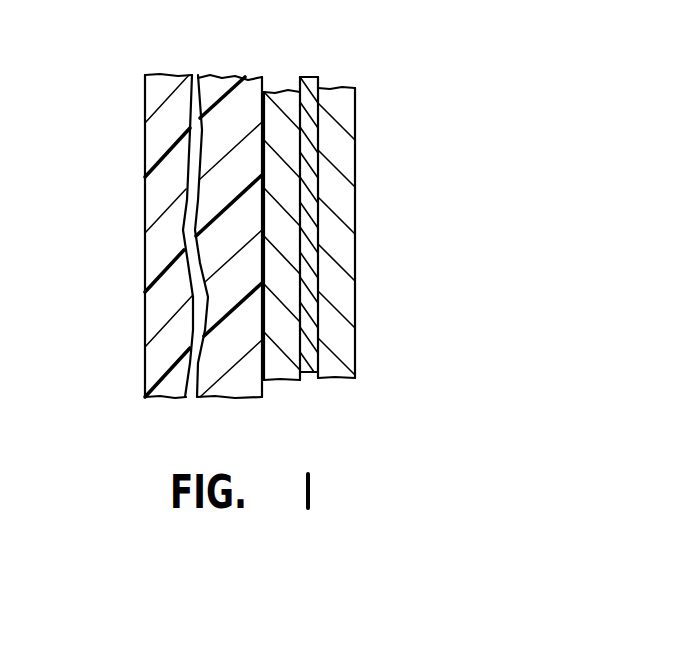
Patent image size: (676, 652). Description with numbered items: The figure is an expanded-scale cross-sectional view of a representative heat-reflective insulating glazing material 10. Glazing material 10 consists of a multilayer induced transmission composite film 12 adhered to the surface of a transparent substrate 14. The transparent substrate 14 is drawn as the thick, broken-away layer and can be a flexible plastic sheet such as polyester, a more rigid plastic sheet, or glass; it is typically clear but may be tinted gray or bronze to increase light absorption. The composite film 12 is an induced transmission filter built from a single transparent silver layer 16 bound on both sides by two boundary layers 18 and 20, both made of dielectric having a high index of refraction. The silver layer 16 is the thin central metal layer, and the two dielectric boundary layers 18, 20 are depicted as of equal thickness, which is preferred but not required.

The glazing material 10 is at (118, 163).
The multilayer induced transmission composite film 12 is at (360, 55).
The transparent substrate 14 is at (145, 357).
The transparent silver layer 16 is at (314, 286).
The boundary layer 18 is at (290, 379).
The boundary layer 20 is at (358, 363).